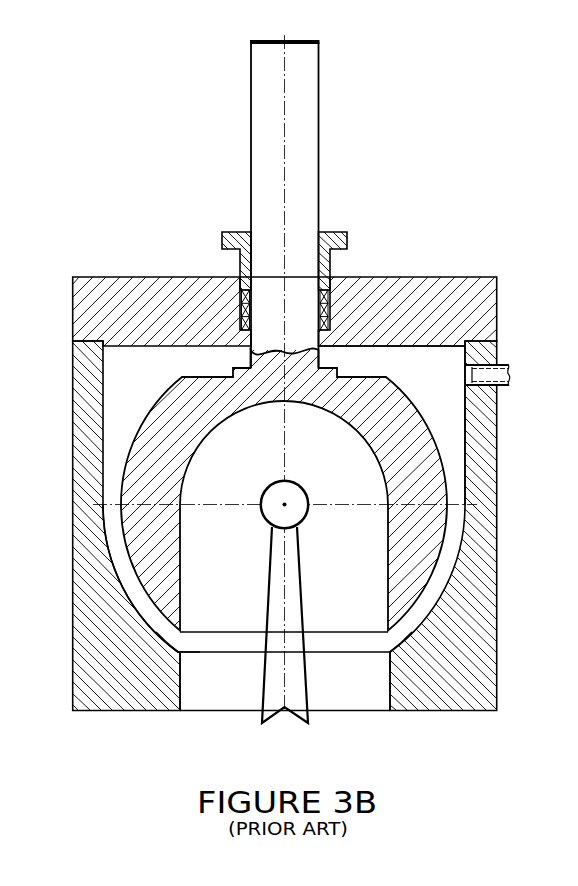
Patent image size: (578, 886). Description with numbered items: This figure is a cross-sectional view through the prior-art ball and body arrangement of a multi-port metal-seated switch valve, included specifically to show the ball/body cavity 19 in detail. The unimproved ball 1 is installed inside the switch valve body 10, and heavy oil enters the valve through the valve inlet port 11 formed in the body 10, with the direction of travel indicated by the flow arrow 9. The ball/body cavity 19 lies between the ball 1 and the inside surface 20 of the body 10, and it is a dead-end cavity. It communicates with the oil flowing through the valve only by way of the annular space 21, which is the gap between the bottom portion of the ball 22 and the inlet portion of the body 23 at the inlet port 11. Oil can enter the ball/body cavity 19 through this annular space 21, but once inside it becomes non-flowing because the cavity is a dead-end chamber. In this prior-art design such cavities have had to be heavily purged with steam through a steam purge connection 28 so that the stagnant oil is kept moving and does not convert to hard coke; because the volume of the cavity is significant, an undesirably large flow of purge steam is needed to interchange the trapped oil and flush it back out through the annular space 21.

The ball 1 is at (175, 400).
The flow arrow 9 is at (291, 662).
The switch valve body 10 is at (93, 301).
The valve inlet port 11 is at (221, 688).
The ball/body cavity 19 is at (392, 360).
The inside surface of the body 20 is at (114, 568).
The annular space 21 is at (392, 643).
The bottom portion of the ball 22 is at (332, 633).
The inlet portion of the body 23 is at (185, 663).
The steam purge connection 28 is at (501, 365).